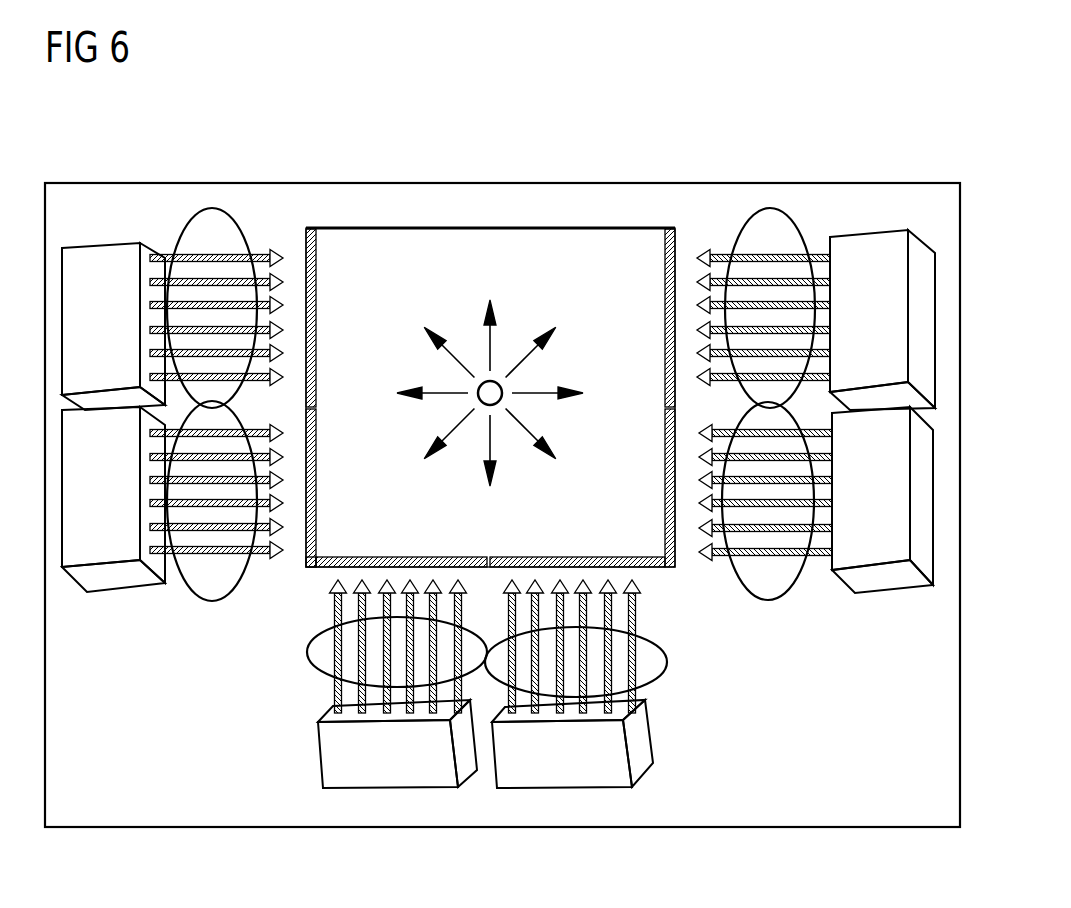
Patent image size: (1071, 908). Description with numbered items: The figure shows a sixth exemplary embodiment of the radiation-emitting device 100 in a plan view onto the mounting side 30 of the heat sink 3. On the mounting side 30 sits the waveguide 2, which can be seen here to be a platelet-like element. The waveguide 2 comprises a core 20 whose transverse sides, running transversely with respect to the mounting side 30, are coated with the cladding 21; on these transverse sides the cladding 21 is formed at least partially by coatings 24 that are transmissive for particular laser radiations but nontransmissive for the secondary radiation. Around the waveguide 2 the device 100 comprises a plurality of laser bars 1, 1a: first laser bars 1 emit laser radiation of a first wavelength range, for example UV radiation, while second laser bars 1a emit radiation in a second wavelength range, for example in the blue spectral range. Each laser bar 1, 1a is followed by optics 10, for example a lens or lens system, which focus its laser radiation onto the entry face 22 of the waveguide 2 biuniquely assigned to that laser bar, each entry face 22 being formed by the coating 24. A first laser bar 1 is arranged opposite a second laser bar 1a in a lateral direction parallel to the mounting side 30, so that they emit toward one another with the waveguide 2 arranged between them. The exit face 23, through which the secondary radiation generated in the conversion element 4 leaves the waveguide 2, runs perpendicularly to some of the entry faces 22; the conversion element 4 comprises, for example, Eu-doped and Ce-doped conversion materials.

The laser bar 1 is at (101, 253).
The second laser bar 1a is at (870, 240).
The waveguide 2 is at (310, 568).
The heat sink 3 is at (762, 820).
The conversion element 4 is at (490, 384).
The optics 10 is at (212, 208).
The core 20 is at (586, 236).
The cladding 21 is at (312, 228).
The entry face 22 is at (303, 252).
The exit face 23 is at (368, 220).
The coating 24 is at (310, 294).
The mounting side 30 is at (910, 810).
The radiation-emitting device 100 is at (860, 132).